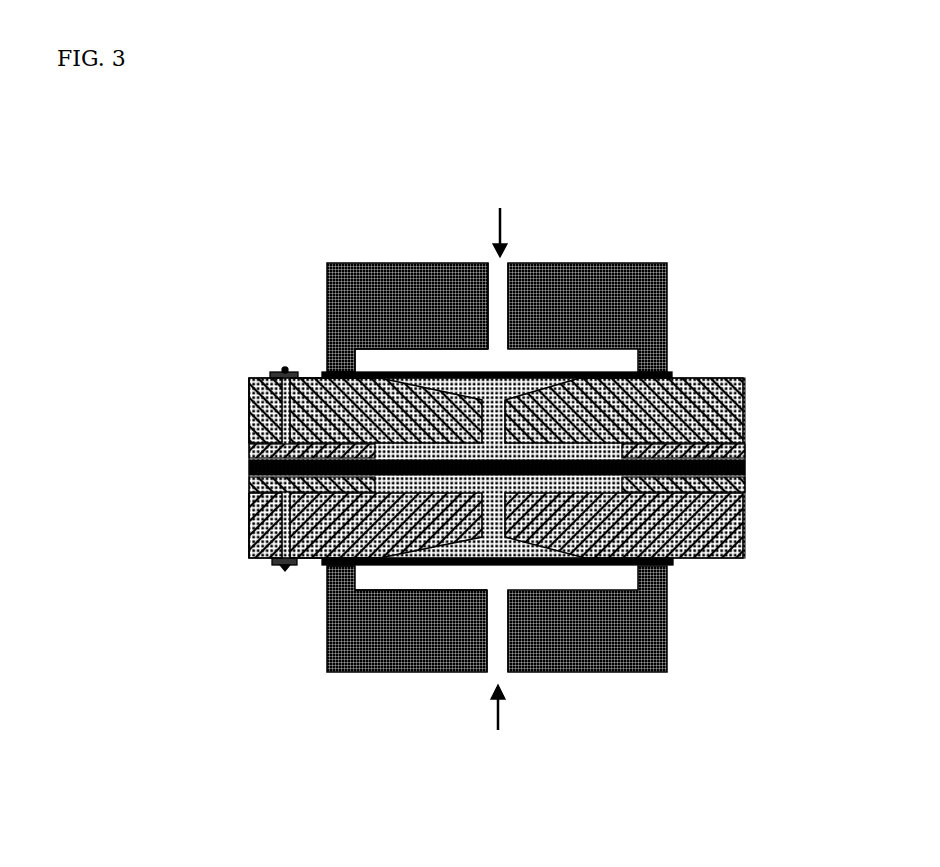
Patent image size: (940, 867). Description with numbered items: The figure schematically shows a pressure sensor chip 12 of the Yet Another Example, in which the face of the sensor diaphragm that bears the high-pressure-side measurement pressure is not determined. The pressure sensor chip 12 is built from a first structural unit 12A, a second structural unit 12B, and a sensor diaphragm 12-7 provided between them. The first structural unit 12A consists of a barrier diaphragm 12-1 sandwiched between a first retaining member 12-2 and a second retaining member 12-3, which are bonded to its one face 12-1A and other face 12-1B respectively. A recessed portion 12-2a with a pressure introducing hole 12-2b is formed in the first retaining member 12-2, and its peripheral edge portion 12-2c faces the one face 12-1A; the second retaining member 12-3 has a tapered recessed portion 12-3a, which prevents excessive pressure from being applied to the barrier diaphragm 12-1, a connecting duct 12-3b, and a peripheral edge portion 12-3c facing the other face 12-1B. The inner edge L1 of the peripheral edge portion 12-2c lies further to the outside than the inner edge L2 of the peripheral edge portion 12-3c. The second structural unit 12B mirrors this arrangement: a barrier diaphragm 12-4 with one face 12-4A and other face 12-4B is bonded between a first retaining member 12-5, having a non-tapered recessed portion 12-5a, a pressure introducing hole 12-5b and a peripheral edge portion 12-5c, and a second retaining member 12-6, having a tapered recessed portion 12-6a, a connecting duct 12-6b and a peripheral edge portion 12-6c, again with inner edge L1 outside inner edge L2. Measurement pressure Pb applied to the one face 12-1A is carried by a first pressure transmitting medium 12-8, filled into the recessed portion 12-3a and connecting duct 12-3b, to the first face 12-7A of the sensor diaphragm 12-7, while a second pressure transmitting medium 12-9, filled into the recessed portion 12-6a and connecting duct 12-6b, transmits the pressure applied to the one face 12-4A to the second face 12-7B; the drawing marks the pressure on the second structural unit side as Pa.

The pressure sensor chip 12 is at (728, 226).
The first structural unit 12A is at (863, 258).
The second structural unit 12B is at (872, 510).
The barrier diaphragm 12-1 is at (676, 372).
The one face of barrier diaphragm 12-1A is at (598, 374).
The other face of barrier diaphragm 12-1B is at (650, 374).
The first retaining member 12-2 is at (662, 283).
The recessed portion 12-2a is at (347, 367).
The pressure introducing hole 12-2b is at (460, 367).
The peripheral edge portion 12-2c is at (345, 367).
The second retaining member 12-3 is at (748, 378).
The recessed portion 12-3a is at (405, 378).
The connecting duct 12-3b is at (248, 428).
The peripheral edge portion 12-3c is at (272, 397).
The barrier diaphragm 12-4 is at (673, 565).
The one face of barrier diaphragm 12-4A is at (545, 563).
The other face of barrier diaphragm 12-4B is at (660, 540).
The first retaining member 12-5 is at (667, 652).
The recessed portion 12-5a is at (372, 590).
The pressure introducing hole 12-5b is at (486, 600).
The peripheral edge portion 12-5c is at (327, 585).
The second retaining member 12-6 is at (748, 493).
The recessed portion 12-6a is at (440, 560).
The connecting duct 12-6b is at (248, 545).
The peripheral edge portion 12-6c is at (270, 562).
The sensor diaphragm 12-7 is at (746, 467).
The first face of sensor diaphragm 12-7A is at (248, 445).
The second face of sensor diaphragm 12-7B is at (248, 525).
The first pressure transmitting medium 12-8 is at (533, 372).
The second pressure transmitting medium 12-9 is at (515, 566).
The inner edge of peripheral edge portion of first retaining member L1 is at (358, 345).
The inner edge of peripheral edge portion of second retaining member L2 is at (383, 350).
The measurement pressure Pa is at (500, 723).
The measurement pressure Pb is at (498, 223).